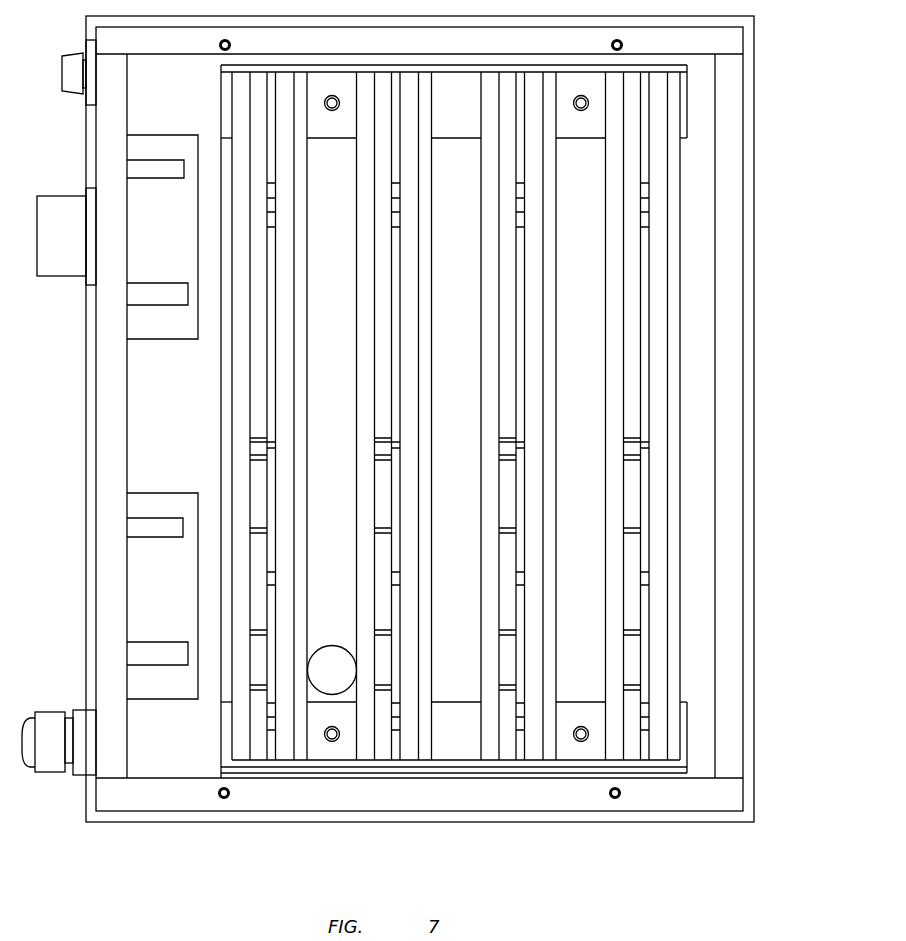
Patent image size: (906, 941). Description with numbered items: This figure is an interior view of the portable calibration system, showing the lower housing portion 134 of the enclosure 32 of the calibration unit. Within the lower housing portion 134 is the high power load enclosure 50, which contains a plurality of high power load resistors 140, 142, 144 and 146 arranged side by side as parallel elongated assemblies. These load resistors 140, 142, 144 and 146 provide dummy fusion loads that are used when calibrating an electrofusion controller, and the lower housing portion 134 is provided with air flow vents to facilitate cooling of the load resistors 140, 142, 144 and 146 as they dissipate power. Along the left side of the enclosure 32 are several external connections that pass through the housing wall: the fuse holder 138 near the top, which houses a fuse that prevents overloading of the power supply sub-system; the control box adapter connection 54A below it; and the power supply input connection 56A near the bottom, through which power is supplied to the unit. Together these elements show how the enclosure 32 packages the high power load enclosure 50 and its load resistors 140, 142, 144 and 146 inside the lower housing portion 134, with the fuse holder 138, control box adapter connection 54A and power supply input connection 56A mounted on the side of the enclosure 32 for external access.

The enclosure 32 is at (767, 46).
The lower housing portion 134 is at (754, 115).
The high power load enclosure 50 is at (715, 222).
The high power load resistor 140 is at (680, 740).
The high power load resistor 142 is at (556, 632).
The high power load resistor 144 is at (433, 658).
The high power load resistor 146 is at (308, 636).
The fuse holder 138 is at (62, 72).
The control box adapter connection 54A is at (37, 212).
The power supply input connection 56A is at (22, 722).